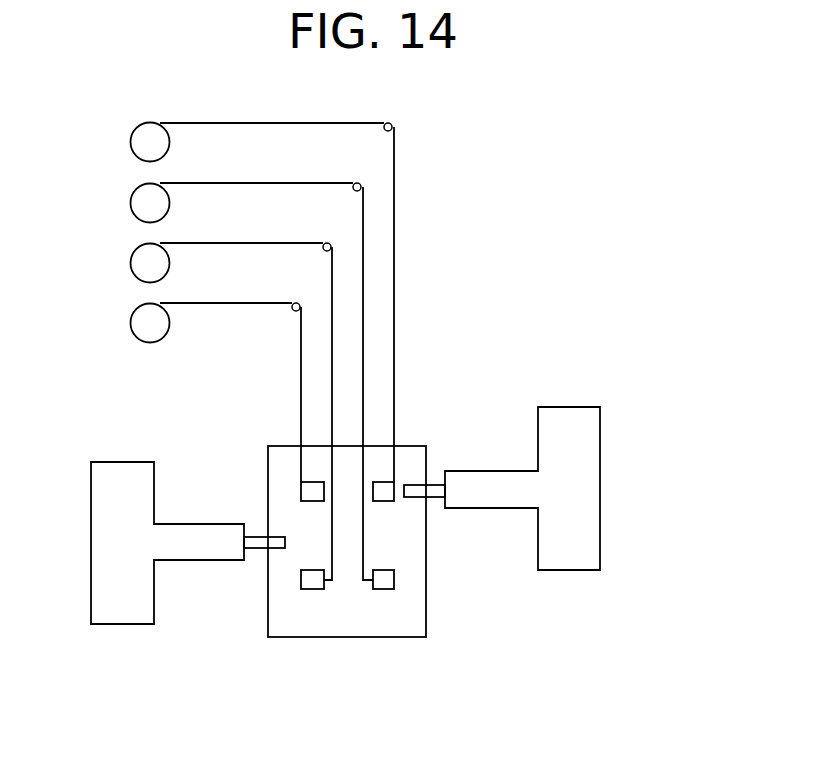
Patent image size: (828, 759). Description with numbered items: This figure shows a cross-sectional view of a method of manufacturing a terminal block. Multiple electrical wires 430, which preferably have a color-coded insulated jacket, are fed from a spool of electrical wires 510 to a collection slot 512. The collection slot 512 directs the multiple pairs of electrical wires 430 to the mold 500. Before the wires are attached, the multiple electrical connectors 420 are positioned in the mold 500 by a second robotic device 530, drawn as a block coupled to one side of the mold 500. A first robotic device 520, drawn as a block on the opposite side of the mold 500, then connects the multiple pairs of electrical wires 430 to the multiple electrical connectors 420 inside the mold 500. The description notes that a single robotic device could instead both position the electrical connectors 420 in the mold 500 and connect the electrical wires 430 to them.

The electrical connectors 420 is at (394, 582).
The electrical wires 430 is at (395, 372).
The mold 500 is at (437, 656).
The spool of electrical wires 510 is at (148, 344).
The collection slot 512 is at (395, 125).
The first robotic device 520 is at (600, 570).
The second robotic device 530 is at (196, 562).